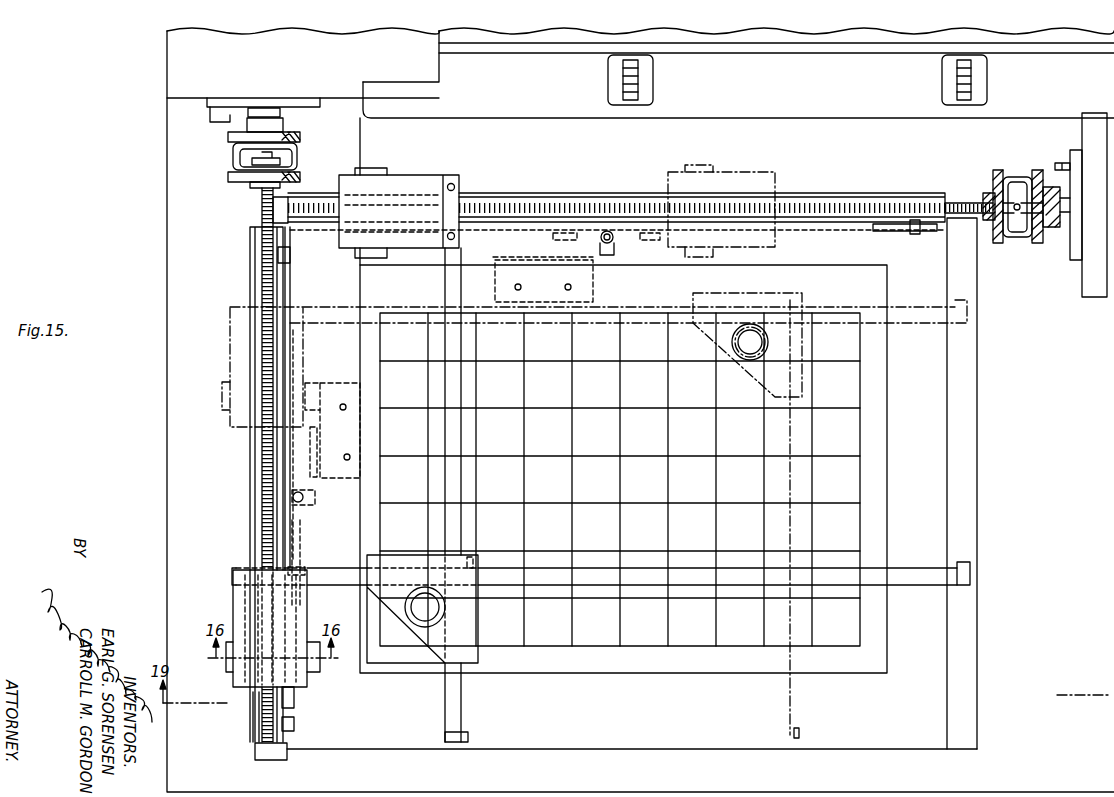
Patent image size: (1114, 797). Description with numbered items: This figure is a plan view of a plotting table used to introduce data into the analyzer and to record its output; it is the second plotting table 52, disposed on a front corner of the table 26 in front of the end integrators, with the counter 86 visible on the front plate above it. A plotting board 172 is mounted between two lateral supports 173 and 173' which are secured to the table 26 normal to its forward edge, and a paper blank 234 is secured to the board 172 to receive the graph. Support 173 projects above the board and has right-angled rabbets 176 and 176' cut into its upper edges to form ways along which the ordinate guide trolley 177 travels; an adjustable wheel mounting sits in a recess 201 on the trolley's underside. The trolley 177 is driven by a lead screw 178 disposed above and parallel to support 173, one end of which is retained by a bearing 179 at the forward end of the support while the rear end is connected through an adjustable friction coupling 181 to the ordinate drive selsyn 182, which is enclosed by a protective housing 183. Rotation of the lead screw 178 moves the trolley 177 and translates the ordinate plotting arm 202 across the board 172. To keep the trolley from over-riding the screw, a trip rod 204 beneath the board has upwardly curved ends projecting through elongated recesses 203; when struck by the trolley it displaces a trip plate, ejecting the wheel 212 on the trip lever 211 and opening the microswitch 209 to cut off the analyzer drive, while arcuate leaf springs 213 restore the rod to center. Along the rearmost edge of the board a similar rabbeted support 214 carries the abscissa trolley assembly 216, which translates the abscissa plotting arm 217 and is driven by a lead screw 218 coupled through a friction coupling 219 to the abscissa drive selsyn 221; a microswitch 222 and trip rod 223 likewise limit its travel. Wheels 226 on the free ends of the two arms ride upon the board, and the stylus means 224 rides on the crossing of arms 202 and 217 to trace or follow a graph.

The table 26 is at (1078, 769).
The second plotting table 52 is at (1000, 452).
The counter 86 is at (652, 80).
The plotting board 172 is at (613, 730).
The lateral support 173 is at (238, 484).
The lateral support 173' is at (1000, 483).
The rabbet 176 is at (316, 708).
The rabbet 176' is at (230, 717).
The ordinate guide trolley 177 is at (307, 678).
The lead screw 178 is at (267, 477).
The bearing 179 is at (263, 750).
The adjustable friction coupling 181 is at (297, 167).
The ordinate drive selsyn 182 is at (206, 113).
The protective housing 183 is at (185, 72).
The recess 201 is at (298, 543).
The ordinate plotting arm 202 is at (748, 580).
The elongated recess 203 is at (290, 295).
The trip rod 204 is at (293, 353).
The microswitch 209 is at (350, 383).
The trip lever 211 is at (314, 478).
The wheel 212 is at (302, 503).
The arcuate leaf spring 213 is at (290, 255).
The rabbeted support 214 is at (525, 193).
The trolley assembly 216 is at (410, 170).
The abscissa plotting arm 217 is at (462, 398).
The lead screw 218 is at (877, 203).
The friction coupling 219 is at (1023, 248).
The abscissa drive selsyn 221 is at (1090, 226).
The microswitch 222 is at (593, 285).
The trip rod 223 is at (915, 232).
The stylus means 224 is at (487, 622).
The wheels 226 is at (970, 585).
The paper blank 234 is at (887, 437).